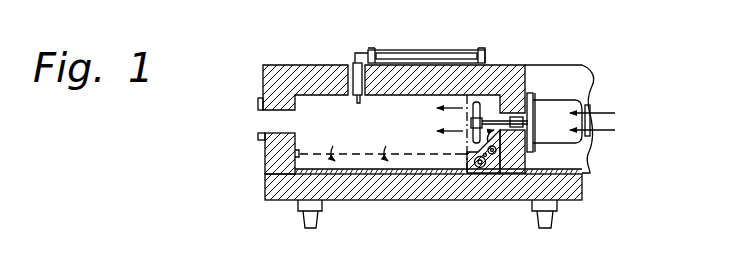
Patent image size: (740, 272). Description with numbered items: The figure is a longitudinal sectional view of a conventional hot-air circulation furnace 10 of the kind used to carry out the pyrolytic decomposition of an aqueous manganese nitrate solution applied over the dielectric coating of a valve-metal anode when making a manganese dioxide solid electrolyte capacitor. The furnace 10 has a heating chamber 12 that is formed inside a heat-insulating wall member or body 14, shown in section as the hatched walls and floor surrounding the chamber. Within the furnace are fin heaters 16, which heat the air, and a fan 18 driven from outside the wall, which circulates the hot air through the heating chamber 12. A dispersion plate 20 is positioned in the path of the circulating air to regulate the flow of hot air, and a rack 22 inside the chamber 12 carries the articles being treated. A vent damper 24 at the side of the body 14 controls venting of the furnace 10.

The furnace 10 is at (246, 91).
The heating chamber 12 is at (340, 130).
The heat-insulating wall member or body 14 is at (291, 68).
The fin heaters 16 is at (469, 176).
The fan 18 is at (497, 112).
The dispersion plate 20 is at (472, 107).
The rack 22 is at (365, 153).
The vent damper 24 is at (256, 114).